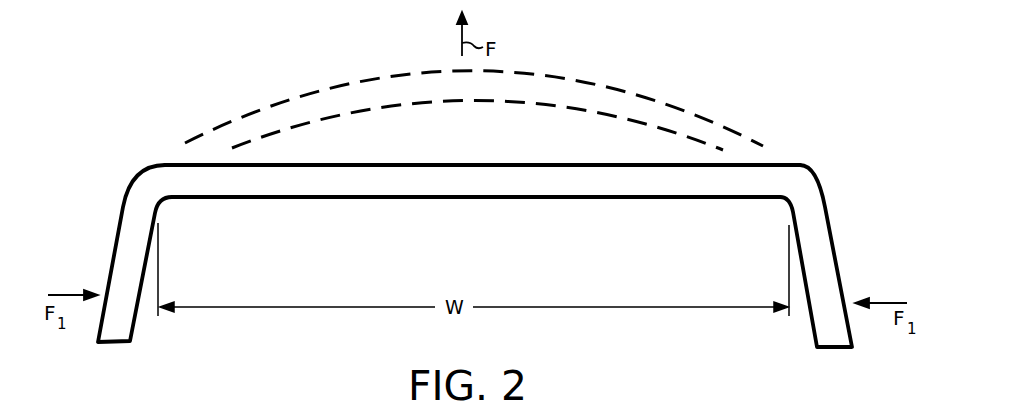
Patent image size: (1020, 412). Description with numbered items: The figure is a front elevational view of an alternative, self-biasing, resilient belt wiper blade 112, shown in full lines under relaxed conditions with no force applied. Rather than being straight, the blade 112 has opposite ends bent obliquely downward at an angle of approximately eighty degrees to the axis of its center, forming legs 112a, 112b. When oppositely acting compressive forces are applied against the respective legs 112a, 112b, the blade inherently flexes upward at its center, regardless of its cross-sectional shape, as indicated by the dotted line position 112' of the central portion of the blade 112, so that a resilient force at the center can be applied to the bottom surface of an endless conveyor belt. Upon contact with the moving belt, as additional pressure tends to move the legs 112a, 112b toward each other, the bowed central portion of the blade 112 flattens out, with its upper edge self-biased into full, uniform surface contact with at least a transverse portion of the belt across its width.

The self-biasing, resilient belt wiper blade 112 is at (474, 204).
The dotted line position of the central portion of the blade 112' is at (474, 92).
The leg 112a is at (118, 263).
The leg 112b is at (832, 258).